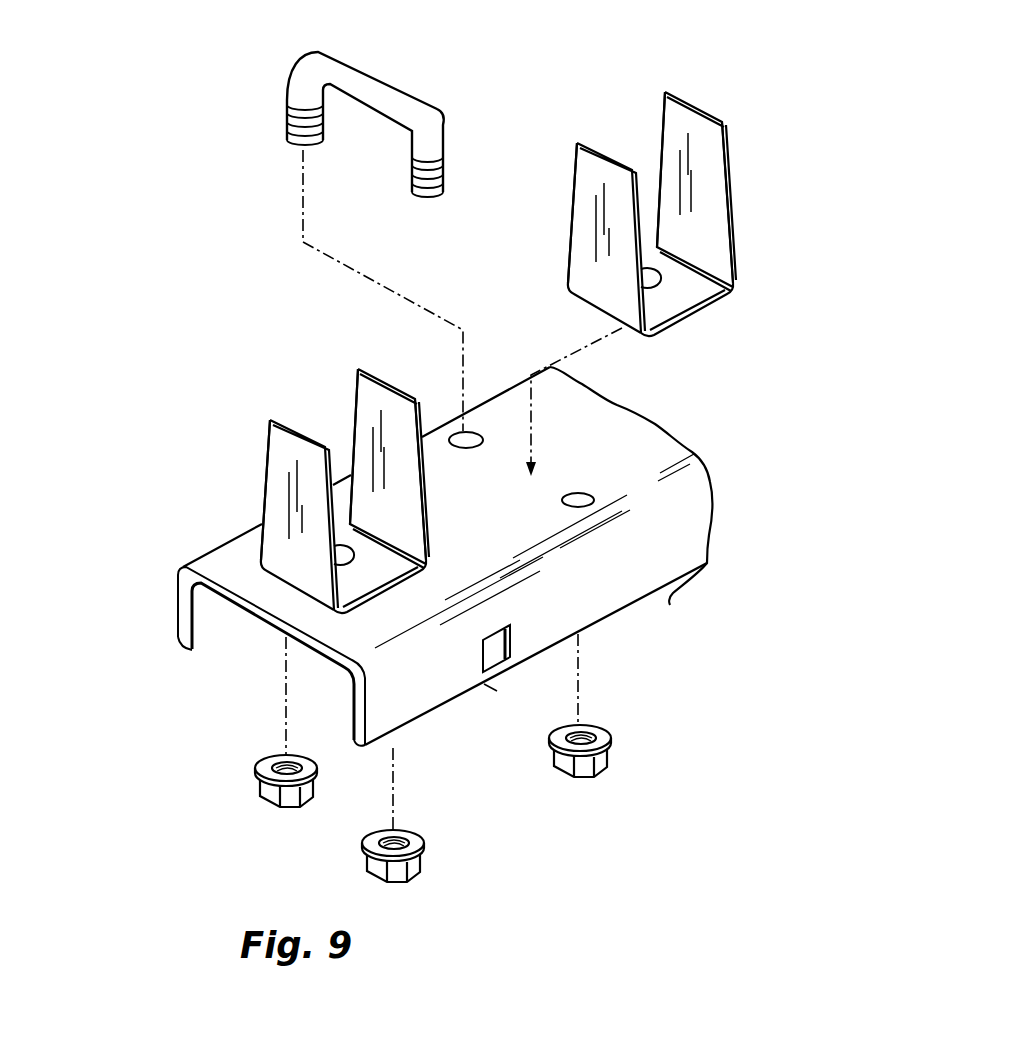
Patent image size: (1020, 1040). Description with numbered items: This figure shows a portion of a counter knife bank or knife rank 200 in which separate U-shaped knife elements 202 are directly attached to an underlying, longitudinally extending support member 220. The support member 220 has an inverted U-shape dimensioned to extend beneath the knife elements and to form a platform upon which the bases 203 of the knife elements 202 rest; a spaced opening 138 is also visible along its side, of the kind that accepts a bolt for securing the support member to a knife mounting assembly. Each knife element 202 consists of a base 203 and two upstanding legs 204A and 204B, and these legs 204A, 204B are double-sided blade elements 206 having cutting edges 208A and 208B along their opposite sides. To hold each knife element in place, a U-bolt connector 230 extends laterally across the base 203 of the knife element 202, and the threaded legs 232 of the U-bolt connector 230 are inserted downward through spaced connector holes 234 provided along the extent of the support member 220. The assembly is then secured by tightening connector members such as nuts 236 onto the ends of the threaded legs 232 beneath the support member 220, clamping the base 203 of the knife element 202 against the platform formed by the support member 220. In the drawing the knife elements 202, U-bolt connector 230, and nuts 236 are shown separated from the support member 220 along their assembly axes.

The counter knife bank 200 is at (170, 602).
The support member 220 is at (670, 605).
The U-shaped knife element 202 is at (609, 138).
The base 203 is at (707, 305).
The leg 204A is at (588, 163).
The leg 204B is at (704, 210).
The double-sided blade element 206 is at (695, 128).
The cutting edge 208A is at (665, 107).
The cutting edge 208B is at (725, 148).
The U-bolt connector 230 is at (418, 85).
The threaded leg 232 is at (285, 114).
The connector hole 234 is at (480, 440).
The nut 236 is at (258, 793).
The opening 138 is at (518, 636).